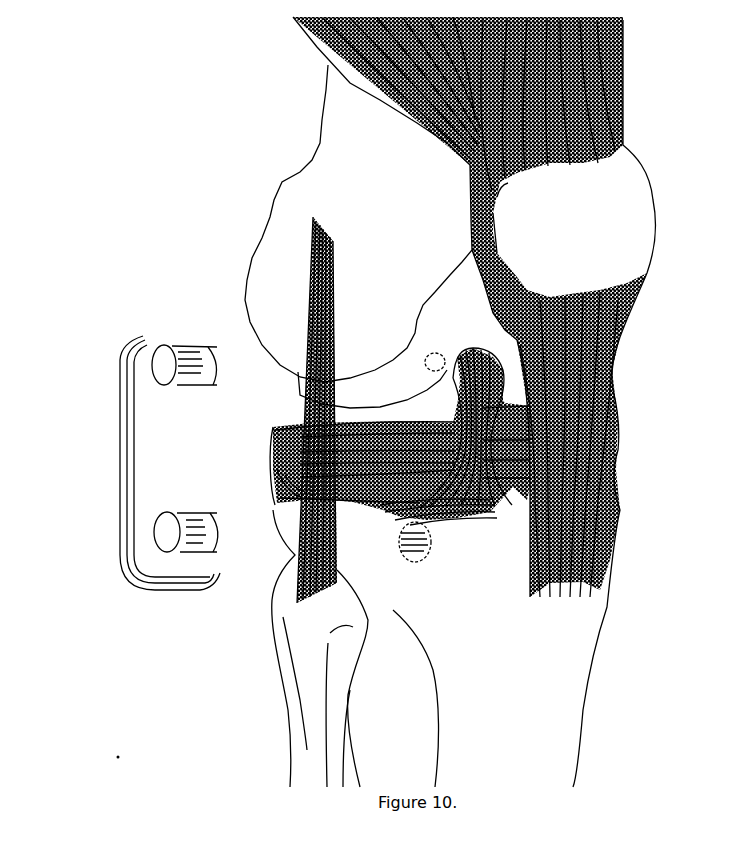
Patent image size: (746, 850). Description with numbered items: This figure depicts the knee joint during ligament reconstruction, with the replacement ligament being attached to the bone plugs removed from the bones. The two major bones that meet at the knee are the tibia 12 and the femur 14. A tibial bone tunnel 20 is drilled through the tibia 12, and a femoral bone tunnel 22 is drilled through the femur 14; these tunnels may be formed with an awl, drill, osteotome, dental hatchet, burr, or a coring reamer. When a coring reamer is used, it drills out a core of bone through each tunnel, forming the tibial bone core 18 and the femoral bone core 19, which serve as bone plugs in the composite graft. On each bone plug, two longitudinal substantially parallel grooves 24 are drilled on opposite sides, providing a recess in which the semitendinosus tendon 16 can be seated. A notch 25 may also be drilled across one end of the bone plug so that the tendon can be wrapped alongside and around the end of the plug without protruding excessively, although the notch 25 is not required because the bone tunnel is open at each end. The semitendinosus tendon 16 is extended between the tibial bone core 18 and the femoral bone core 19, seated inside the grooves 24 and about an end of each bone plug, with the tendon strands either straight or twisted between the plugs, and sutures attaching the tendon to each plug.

The tibia 12 is at (522, 705).
The femur 14 is at (378, 160).
The semitendinosus tendon 16 is at (120, 450).
The tibial bone core 18 is at (175, 568).
The femoral bone core 19 is at (128, 350).
The tibial bone tunnel 20 is at (432, 540).
The femoral bone tunnel 22 is at (443, 367).
The grooves 24 is at (193, 378).
The notch 25 is at (207, 357).